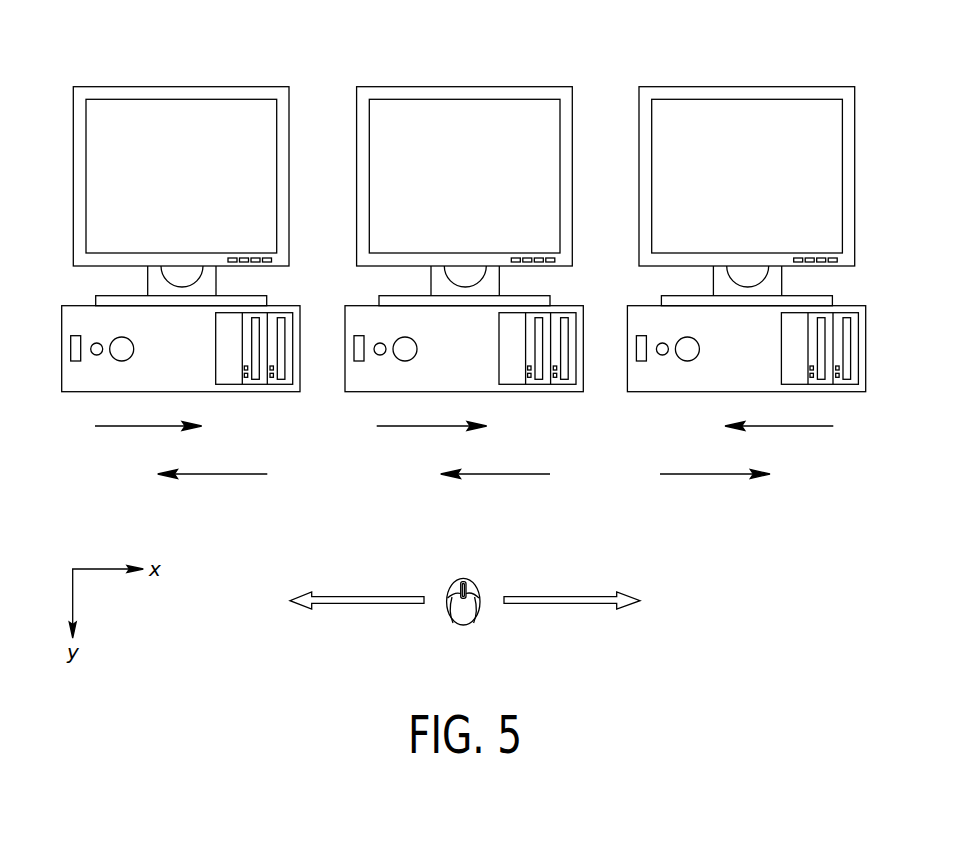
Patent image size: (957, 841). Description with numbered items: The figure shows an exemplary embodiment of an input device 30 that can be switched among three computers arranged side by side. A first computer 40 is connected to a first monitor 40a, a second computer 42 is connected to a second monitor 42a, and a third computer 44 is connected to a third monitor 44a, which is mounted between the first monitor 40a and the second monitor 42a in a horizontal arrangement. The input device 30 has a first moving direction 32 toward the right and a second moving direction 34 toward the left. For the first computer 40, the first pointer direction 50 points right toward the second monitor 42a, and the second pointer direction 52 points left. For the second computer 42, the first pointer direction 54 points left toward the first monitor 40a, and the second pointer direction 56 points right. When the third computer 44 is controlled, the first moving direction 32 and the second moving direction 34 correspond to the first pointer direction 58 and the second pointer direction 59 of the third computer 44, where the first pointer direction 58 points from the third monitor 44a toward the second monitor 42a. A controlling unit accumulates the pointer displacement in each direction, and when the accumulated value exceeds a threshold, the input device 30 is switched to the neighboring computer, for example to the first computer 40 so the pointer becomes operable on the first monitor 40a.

The input device 30 is at (463, 580).
The first moving direction 32 is at (530, 597).
The second moving direction 34 is at (400, 597).
The first computer 40 is at (277, 392).
The first monitor 40a is at (180, 87).
The second computer 42 is at (677, 392).
The second monitor 42a is at (745, 87).
The third computer 44 is at (355, 306).
The third monitor 44a is at (463, 87).
The first pointer direction 50 is at (128, 426).
The second pointer direction 52 is at (222, 474).
The first pointer direction 54 is at (800, 426).
The second pointer direction 56 is at (706, 474).
The first pointer direction 58 is at (412, 426).
The second pointer direction 59 is at (505, 474).